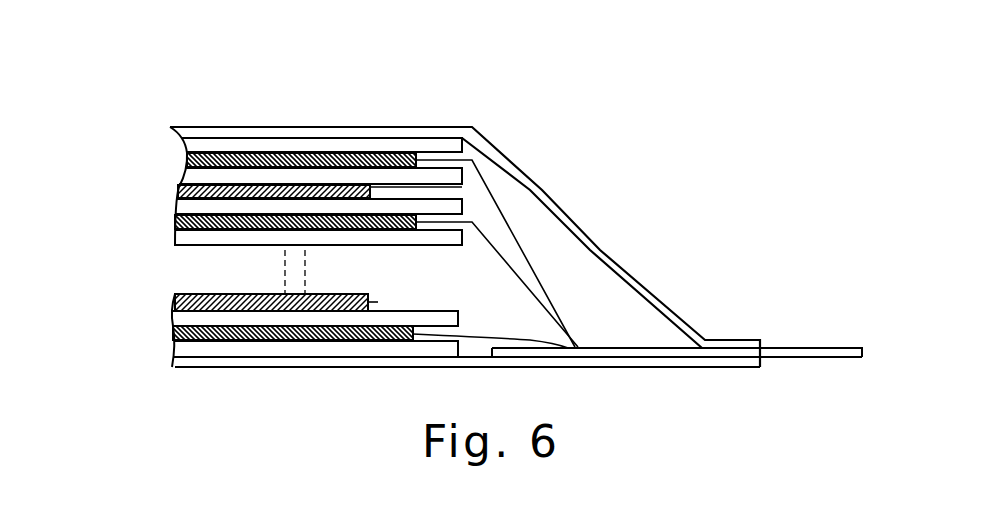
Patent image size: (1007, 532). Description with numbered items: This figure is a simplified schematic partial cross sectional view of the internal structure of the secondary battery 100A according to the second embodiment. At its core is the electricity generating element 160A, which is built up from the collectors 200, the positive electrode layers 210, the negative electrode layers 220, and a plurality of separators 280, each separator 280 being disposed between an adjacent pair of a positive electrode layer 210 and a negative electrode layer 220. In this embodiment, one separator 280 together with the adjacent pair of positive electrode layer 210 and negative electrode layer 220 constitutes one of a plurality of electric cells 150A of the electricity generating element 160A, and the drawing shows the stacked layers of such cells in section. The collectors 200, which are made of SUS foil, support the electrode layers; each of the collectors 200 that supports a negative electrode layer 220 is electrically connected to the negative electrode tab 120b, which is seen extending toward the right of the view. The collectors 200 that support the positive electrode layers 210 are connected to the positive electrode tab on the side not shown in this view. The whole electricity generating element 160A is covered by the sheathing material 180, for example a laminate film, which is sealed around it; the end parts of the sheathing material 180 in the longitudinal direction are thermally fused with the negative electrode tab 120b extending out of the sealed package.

The secondary battery 100A is at (252, 72).
The electricity generating element 160A is at (334, 125).
The sheathing material 180 is at (542, 190).
The collectors 200 is at (512, 232).
The negative electrode tab 120b is at (805, 349).
The electric cell 150A is at (95, 275).
The negative electrode layer 220 is at (187, 160).
The positive electrode layer 210 is at (178, 192).
The separator 280 is at (175, 237).